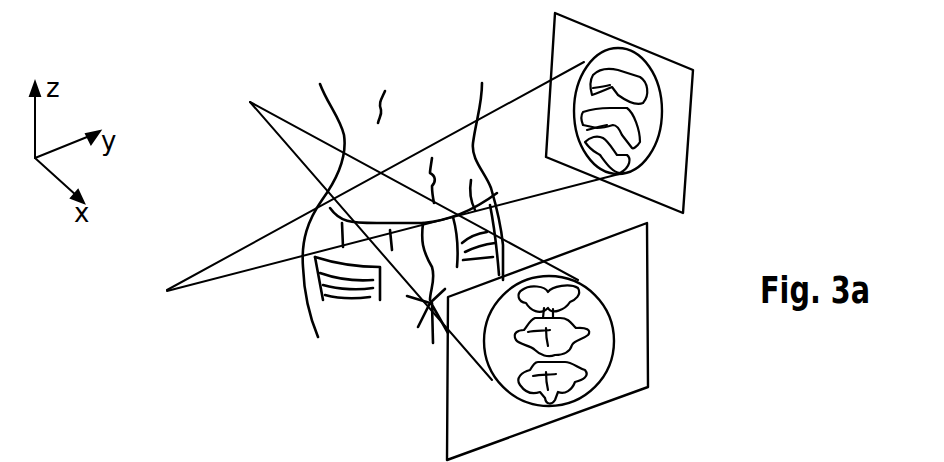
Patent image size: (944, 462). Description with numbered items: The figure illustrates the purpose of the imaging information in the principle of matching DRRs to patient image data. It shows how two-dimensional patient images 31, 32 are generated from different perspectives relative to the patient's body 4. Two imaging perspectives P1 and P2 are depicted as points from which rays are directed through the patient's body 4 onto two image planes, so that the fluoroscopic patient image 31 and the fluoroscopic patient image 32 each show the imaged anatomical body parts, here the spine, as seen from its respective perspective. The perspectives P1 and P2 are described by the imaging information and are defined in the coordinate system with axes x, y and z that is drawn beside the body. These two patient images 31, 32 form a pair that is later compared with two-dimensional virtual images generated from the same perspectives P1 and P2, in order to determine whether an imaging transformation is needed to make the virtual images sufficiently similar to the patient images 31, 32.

The patient's body 4 is at (333, 113).
The perspective P1 is at (400, 231).
The perspective P2 is at (380, 186).
The two-dimensional patient image 31 is at (640, 335).
The two-dimensional patient image 32 is at (663, 110).